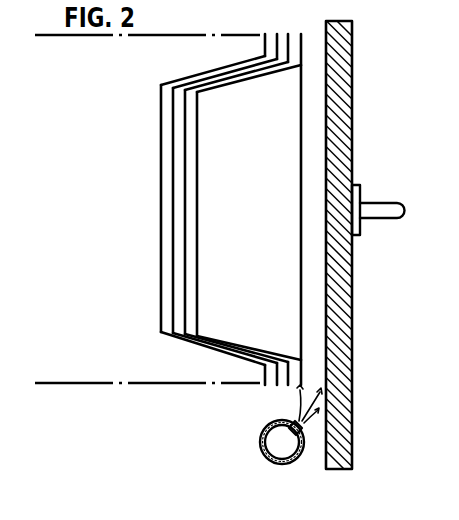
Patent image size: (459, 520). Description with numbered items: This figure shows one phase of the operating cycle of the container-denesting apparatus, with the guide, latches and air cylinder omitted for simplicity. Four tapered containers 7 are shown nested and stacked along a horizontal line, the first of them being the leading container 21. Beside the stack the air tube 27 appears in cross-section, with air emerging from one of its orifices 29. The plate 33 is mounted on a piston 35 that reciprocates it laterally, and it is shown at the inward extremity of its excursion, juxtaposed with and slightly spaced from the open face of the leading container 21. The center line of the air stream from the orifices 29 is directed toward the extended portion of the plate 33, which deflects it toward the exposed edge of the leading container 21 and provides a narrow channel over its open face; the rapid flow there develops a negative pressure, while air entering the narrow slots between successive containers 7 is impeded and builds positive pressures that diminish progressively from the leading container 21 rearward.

The containers 7 is at (197, 190).
The leading container 21 is at (200, 123).
The air tube 27 is at (260, 440).
The orifices 29 is at (294, 420).
The plate 33 is at (338, 469).
The piston 35 is at (388, 203).